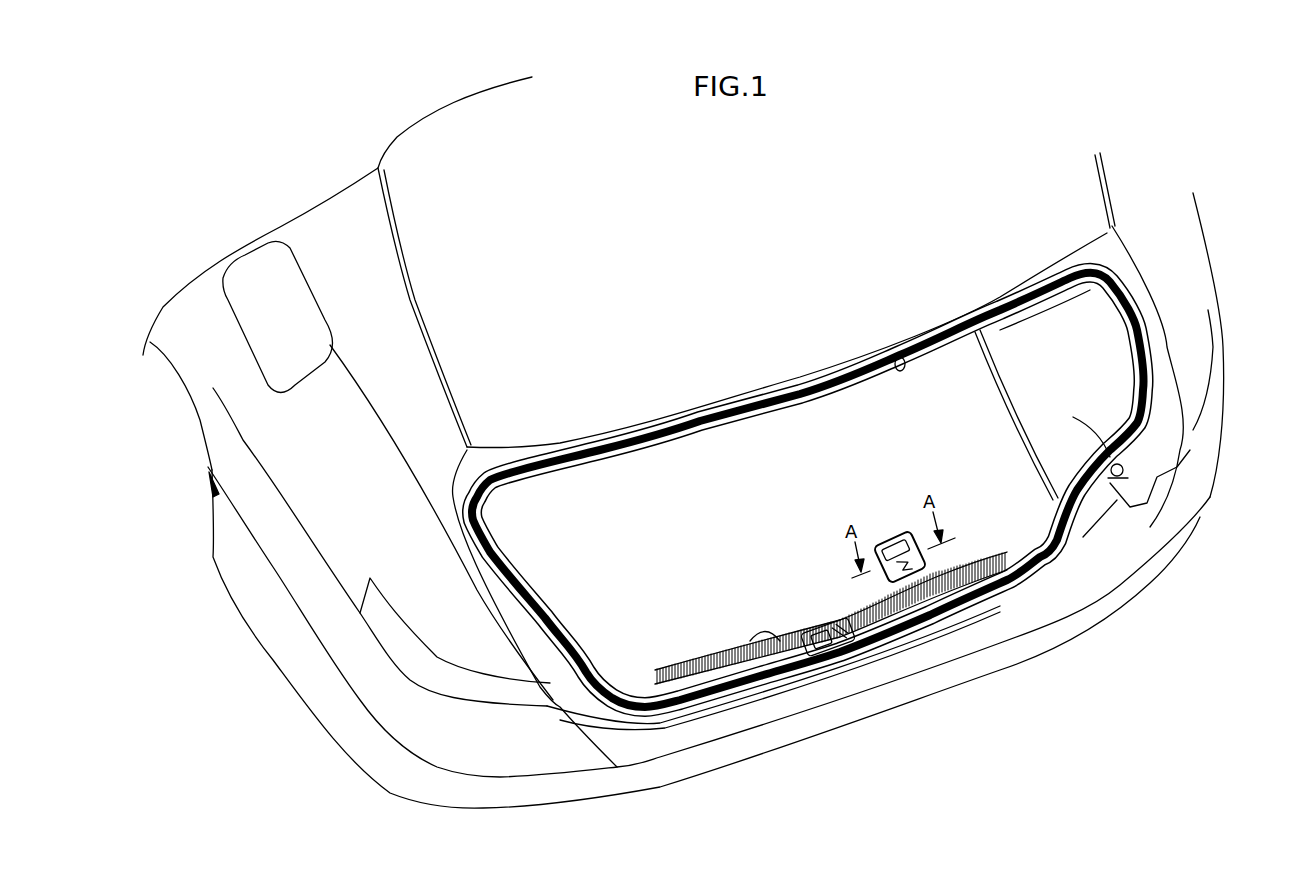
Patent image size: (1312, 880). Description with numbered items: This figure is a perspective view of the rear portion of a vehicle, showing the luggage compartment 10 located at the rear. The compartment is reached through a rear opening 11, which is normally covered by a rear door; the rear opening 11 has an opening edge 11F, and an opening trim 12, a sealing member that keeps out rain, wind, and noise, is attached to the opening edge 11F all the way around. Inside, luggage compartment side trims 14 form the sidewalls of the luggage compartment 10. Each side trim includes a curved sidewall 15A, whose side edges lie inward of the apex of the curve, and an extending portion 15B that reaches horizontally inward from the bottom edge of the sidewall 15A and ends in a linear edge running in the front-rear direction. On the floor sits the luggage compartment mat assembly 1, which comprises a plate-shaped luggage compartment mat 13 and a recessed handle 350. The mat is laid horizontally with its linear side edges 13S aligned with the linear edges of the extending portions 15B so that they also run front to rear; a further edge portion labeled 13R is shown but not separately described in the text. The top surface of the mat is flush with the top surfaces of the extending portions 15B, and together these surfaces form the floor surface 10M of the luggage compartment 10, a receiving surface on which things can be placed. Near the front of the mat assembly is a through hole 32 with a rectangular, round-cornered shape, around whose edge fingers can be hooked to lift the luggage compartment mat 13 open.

The luggage compartment mat assembly 1 is at (1216, 134).
The luggage compartment 10 is at (707, 598).
The floor surface 10M is at (1177, 740).
The rear opening 11 is at (778, 628).
The opening edge 11F is at (893, 363).
The opening trim 12 is at (810, 384).
The luggage compartment mat 13 is at (987, 505).
The rear edge portion 13R is at (962, 553).
The linear side edges 13S is at (975, 332).
The luggage compartment side trims 14 is at (1064, 335).
The sidewall 15A is at (1125, 438).
The extending portion 15B is at (1113, 490).
The through hole 32 is at (858, 640).
The recessed handle 350 is at (898, 590).